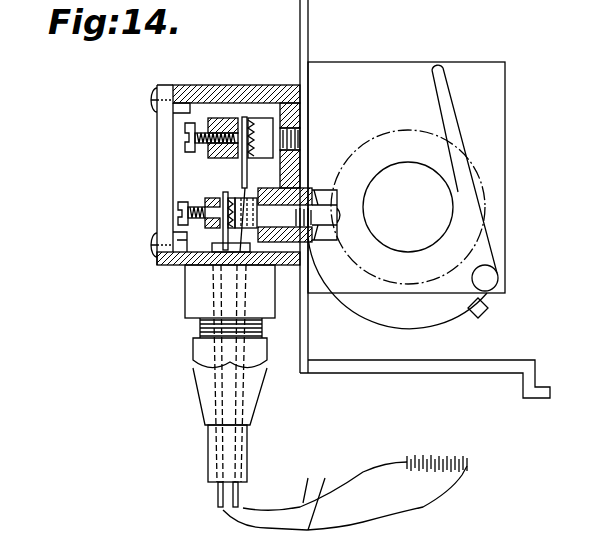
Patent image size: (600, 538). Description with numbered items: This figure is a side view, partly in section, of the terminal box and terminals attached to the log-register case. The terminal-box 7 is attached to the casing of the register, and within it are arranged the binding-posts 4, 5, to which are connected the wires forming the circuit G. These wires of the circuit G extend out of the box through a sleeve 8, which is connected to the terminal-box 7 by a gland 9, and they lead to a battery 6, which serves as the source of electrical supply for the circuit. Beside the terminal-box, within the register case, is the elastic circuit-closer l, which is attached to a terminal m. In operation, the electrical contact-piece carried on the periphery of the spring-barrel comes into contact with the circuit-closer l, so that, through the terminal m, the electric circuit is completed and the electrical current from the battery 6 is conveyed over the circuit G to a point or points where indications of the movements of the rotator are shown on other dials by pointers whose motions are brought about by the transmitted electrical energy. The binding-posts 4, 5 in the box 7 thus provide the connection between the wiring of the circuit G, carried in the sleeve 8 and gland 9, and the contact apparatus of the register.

The terminal-box 7 is at (157, 190).
The binding-post 4 is at (186, 156).
The binding-post 5 is at (180, 222).
The gland 9 is at (265, 387).
The sleeve 8 is at (247, 450).
The battery 6 is at (438, 456).
The circuit-closer l is at (458, 120).
The terminal m is at (493, 313).
The circuit G is at (324, 491).